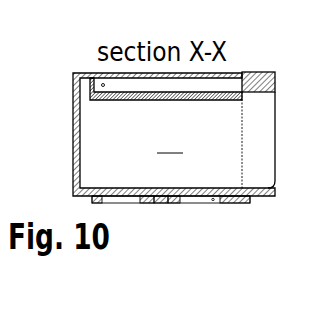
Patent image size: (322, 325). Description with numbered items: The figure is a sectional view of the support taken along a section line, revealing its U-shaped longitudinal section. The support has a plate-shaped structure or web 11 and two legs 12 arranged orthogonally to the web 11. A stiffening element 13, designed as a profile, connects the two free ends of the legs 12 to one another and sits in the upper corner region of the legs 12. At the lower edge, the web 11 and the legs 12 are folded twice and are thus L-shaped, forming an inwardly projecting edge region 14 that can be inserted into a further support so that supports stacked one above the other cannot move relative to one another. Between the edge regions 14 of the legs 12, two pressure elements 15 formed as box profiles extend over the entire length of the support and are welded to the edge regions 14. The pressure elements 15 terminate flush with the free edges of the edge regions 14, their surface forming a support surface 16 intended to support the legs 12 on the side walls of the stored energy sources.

The plate-shaped structure or web 11 is at (74, 133).
The legs 12 is at (170, 141).
The stiffening element 13 is at (262, 71).
The edge region 14 is at (148, 198).
The pressure elements 15 is at (171, 200).
The support surface 16 is at (164, 199).